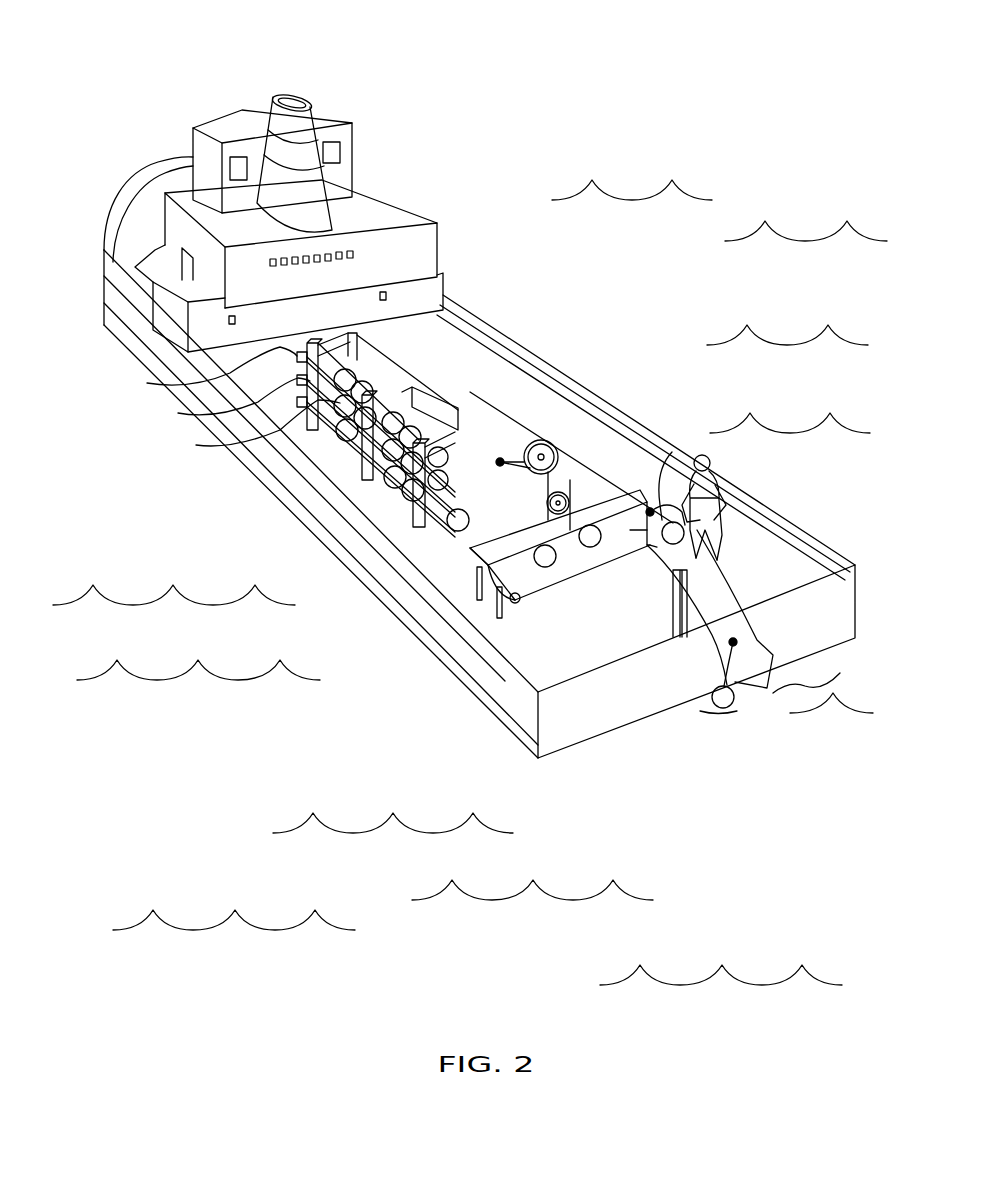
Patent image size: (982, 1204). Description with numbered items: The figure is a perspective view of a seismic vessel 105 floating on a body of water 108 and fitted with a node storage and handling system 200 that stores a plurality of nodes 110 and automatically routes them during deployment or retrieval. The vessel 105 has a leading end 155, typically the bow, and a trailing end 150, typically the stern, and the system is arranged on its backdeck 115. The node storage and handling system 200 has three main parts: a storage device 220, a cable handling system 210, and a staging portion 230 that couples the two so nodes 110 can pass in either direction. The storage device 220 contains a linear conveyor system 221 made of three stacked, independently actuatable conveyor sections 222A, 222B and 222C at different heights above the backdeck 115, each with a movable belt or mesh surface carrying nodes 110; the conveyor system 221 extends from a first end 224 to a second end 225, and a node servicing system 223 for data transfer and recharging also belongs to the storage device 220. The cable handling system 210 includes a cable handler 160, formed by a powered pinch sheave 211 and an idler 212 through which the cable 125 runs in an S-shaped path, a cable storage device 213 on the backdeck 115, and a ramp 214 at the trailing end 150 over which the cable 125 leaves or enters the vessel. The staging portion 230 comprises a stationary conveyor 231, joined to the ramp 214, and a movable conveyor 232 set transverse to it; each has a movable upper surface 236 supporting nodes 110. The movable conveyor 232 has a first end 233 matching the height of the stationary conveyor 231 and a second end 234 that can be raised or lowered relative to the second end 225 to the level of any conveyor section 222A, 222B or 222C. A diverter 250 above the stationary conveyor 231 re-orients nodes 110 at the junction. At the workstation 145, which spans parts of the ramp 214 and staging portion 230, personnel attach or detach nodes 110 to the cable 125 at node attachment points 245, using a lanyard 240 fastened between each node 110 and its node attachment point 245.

The seismic vessel 105 is at (296, 88).
The body of water 108 is at (793, 829).
The nodes 110 is at (338, 427).
The backdeck 115 is at (200, 337).
The cable 125 is at (827, 673).
The workstation 145 is at (677, 436).
The trailing end 150 is at (565, 762).
The leading end 155 is at (138, 180).
The cable handler 160 is at (541, 433).
The node storage and handling system 200 is at (590, 292).
The cable handling system 210 is at (603, 432).
The powered pinch sheave 211 is at (530, 450).
The idler 212 is at (548, 524).
The cable storage device 213 is at (500, 460).
The ramp 214 is at (730, 578).
The storage device 220 is at (389, 341).
The conveyor system 221 is at (287, 507).
The conveyor section 222A is at (194, 371).
The conveyor section 222B is at (214, 401).
The conveyor section 222C is at (239, 426).
The node servicing system 223 is at (366, 366).
The first end 224 is at (298, 352).
The second end 225 is at (325, 546).
The staging portion 230 is at (490, 614).
The stationary conveyor 231 is at (622, 550).
The movable conveyor 232 is at (478, 546).
The first end 233 is at (440, 657).
The second end 234 is at (380, 548).
The movable upper surface 236 is at (476, 598).
The lanyard 240 is at (672, 452).
The node attachment points 245 is at (499, 458).
The diverter 250 is at (518, 622).